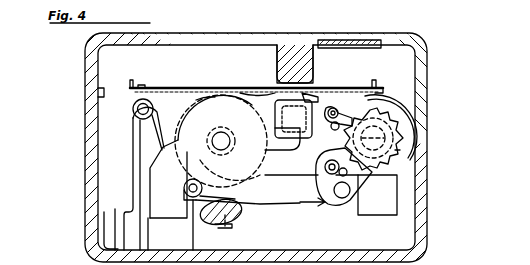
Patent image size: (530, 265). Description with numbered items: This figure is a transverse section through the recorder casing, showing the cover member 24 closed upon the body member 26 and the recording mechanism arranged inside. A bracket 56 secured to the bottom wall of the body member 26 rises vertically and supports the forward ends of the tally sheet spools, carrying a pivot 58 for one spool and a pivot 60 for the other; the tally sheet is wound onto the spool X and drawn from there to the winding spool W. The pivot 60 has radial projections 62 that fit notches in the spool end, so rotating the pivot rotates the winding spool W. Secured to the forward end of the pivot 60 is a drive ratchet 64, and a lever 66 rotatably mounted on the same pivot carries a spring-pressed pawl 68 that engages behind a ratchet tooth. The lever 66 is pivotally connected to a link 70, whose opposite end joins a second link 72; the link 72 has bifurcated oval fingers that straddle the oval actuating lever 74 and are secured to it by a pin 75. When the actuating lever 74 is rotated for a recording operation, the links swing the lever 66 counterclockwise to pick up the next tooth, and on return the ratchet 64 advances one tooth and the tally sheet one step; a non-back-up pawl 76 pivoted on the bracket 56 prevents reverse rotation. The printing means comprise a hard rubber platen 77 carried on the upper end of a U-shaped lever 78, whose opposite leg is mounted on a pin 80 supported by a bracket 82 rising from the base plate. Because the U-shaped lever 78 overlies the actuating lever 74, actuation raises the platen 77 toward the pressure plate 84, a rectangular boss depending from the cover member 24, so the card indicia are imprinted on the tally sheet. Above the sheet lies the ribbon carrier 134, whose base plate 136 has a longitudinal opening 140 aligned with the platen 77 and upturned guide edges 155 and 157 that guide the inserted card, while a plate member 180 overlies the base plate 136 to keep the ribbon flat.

The cover member 24 is at (390, 38).
The body member 26 is at (420, 212).
The bracket 56 is at (155, 182).
The pivot 58 is at (214, 136).
The pivot 60 is at (416, 129).
The radial projections 62 is at (405, 139).
The drive ratchet 64 is at (390, 160).
The lever 66 is at (398, 177).
The pawl 68 is at (327, 160).
The link 70 is at (317, 215).
The second link 72 is at (191, 200).
The actuating lever 74 is at (243, 218).
The pin 75 is at (232, 220).
The non-back-up pawl 76 is at (352, 118).
The hard rubber platen 77 is at (318, 96).
The U-shaped lever 78 is at (276, 205).
The pin 80 is at (139, 109).
The bracket 82 is at (136, 148).
The pressure plate 84 is at (289, 80).
The carrier 134 is at (97, 93).
The base plate 136 is at (256, 83).
The longitudinally extending rectangular opening 140 is at (257, 81).
The upturned guide edge 155 is at (130, 83).
The upturned guide edge 157 is at (374, 82).
The plate member 180 is at (144, 85).
The spool X is at (197, 100).
The winding spool W is at (416, 115).